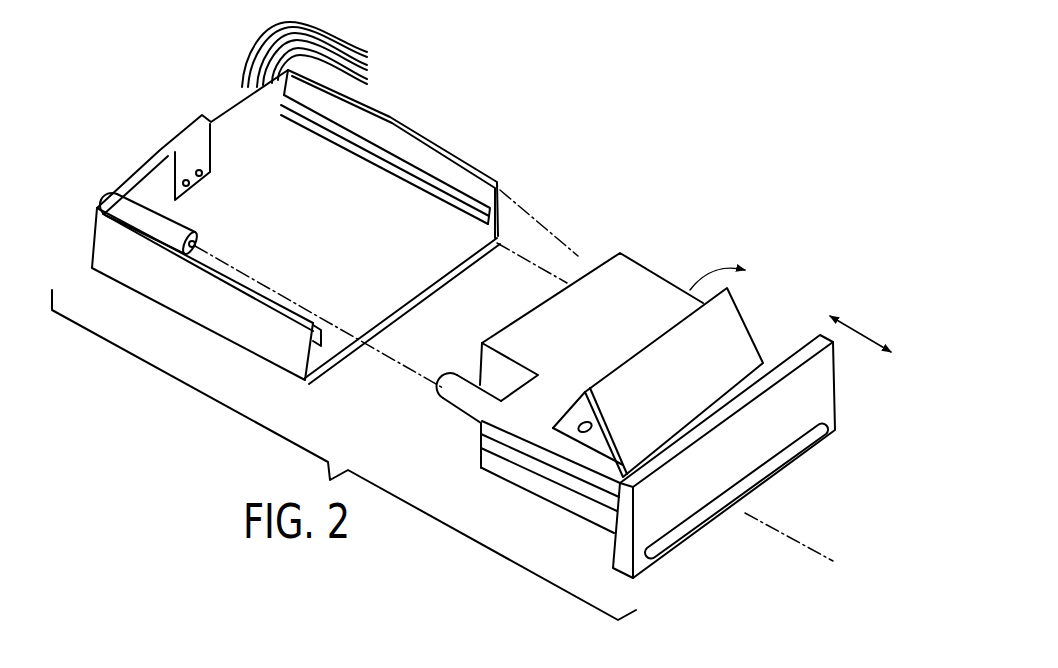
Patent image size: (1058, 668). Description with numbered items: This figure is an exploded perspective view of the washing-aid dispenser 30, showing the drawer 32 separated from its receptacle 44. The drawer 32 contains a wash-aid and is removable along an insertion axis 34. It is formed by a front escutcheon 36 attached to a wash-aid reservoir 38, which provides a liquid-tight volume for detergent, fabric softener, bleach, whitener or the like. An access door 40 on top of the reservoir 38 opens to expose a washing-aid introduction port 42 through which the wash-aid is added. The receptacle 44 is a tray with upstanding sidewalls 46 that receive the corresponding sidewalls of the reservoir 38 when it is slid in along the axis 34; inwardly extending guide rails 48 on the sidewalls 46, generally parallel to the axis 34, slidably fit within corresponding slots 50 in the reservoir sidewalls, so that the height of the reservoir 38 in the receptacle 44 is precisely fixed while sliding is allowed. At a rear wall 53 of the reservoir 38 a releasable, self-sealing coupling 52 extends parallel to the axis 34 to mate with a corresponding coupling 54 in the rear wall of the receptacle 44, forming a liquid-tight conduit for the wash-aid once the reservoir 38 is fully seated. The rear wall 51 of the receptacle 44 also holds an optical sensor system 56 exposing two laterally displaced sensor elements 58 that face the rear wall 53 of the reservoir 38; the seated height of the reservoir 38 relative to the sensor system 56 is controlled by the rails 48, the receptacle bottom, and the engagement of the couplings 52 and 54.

The washing-aid dispenser 30 is at (653, 159).
The drawer 32 is at (650, 568).
The axis 34 is at (790, 537).
The front escutcheon 36 is at (822, 391).
The wash-aid reservoir 38 is at (651, 277).
The access door 40 is at (743, 318).
The washing-aid introduction port 42 is at (580, 433).
The receptacle 44 is at (452, 146).
The sidewalls 46 is at (478, 165).
The guide rails 48 is at (400, 158).
The slots 50 is at (535, 473).
The rear wall of the receptacle 51 is at (234, 128).
The releasable coupling 52 is at (457, 394).
The rear wall of the reservoir 53 is at (580, 258).
The coupling 54 is at (146, 203).
The optical sensor system 56 is at (190, 135).
The sensor elements 58 is at (203, 180).